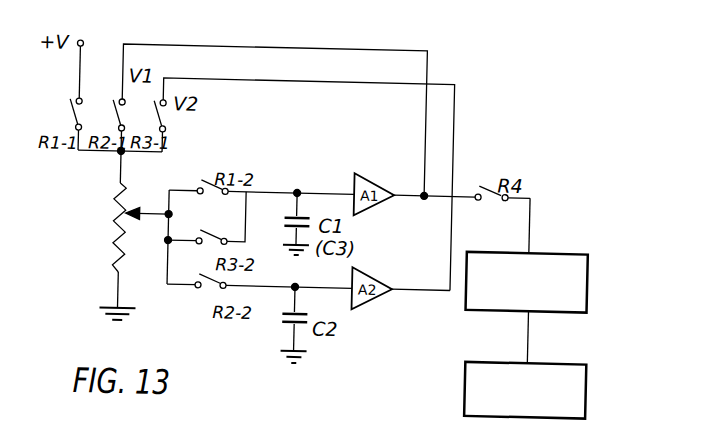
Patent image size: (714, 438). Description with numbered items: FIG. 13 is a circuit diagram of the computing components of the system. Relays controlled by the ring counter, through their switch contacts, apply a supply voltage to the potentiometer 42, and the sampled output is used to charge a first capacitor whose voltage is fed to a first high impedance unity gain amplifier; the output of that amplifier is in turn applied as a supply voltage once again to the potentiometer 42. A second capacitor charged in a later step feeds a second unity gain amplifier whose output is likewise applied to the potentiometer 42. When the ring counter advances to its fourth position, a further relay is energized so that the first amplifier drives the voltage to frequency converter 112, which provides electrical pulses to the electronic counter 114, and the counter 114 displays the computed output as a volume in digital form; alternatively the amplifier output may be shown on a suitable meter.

The potentiometer 42 is at (112, 239).
The voltage to frequency converter 112 is at (588, 228).
The electronic counter 114 is at (471, 378).